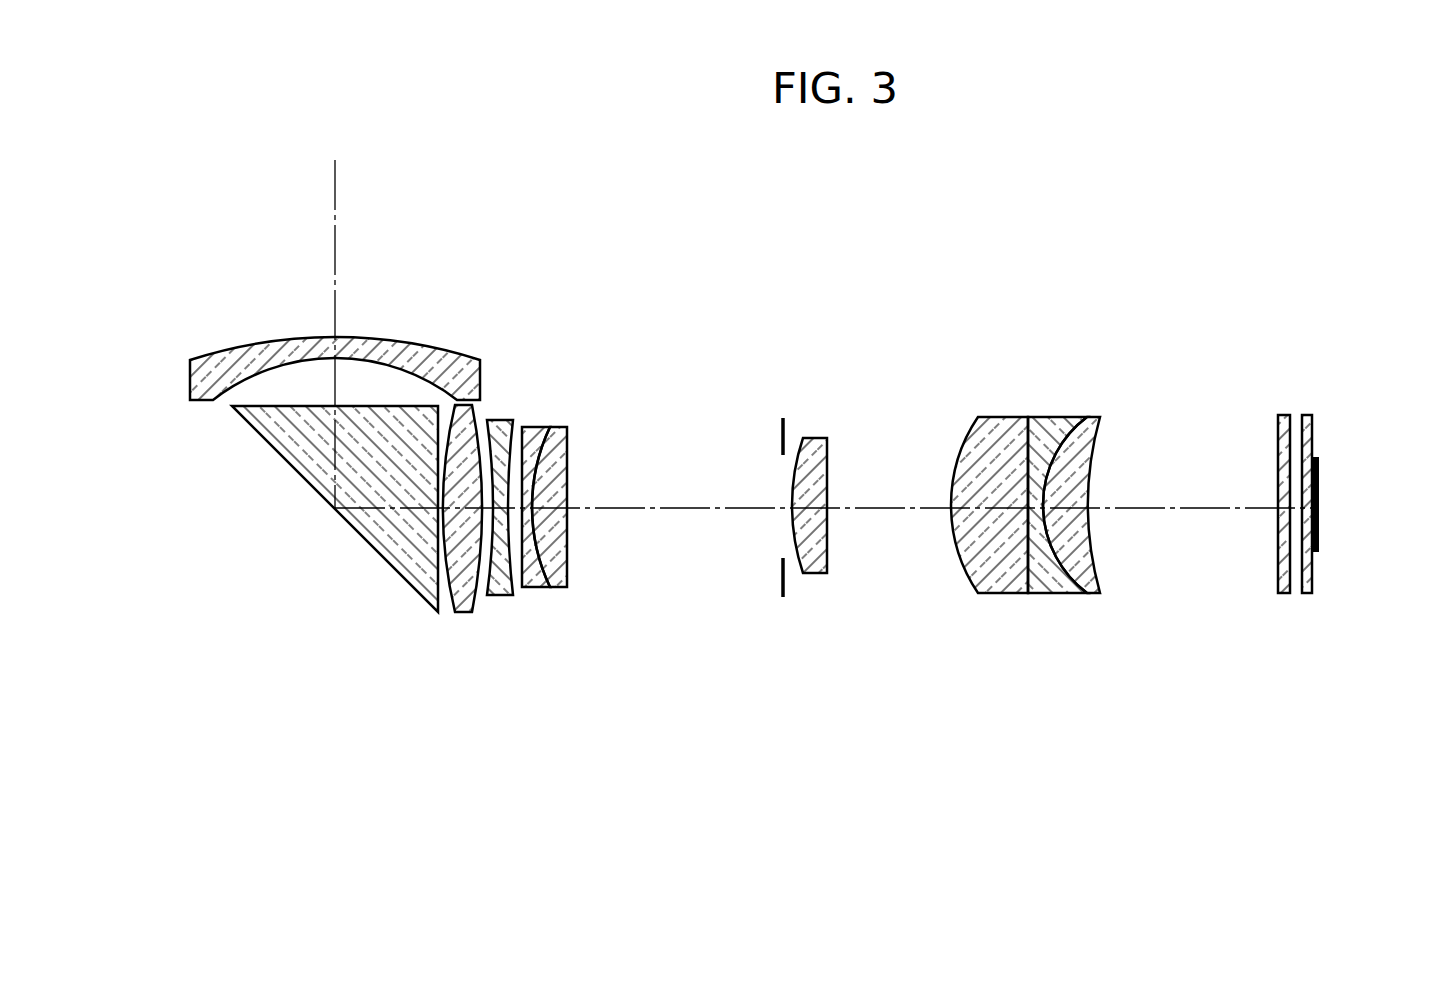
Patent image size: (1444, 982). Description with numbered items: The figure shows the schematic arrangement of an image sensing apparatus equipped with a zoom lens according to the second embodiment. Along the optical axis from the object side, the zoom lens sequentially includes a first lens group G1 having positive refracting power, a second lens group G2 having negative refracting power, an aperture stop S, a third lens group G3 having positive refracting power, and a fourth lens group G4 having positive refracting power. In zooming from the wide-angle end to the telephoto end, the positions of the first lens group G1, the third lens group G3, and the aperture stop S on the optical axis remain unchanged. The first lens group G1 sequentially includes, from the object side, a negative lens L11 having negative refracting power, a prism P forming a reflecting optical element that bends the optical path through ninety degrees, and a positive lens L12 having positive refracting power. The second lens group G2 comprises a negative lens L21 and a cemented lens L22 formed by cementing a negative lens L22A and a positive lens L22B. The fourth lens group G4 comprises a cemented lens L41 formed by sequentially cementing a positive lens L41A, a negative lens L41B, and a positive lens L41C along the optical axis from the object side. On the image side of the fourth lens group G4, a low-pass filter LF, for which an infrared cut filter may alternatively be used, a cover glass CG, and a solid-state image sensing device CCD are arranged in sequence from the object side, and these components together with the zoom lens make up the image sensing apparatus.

The first lens group G1 is at (288, 571).
The negative lens L11 is at (190, 378).
The prism P is at (278, 452).
The positive lens L12 is at (458, 550).
The second lens group G2 is at (593, 544).
The negative lens L21 is at (500, 418).
The cemented lens L22 is at (612, 435).
The negative lens L22A is at (537, 425).
The positive lens L22B is at (528, 335).
The aperture stop S is at (783, 430).
The third lens group G3 is at (830, 722).
The fourth lens group G4 is at (1062, 543).
The cemented lens L41 is at (1062, 437).
The positive lens L41A is at (998, 417).
The negative lens L41B is at (1048, 417).
The positive lens L41C is at (1110, 462).
The low-pass filter LF is at (1282, 415).
The cover glass CG is at (1308, 415).
The solid-state image sensing device CCD is at (1319, 478).